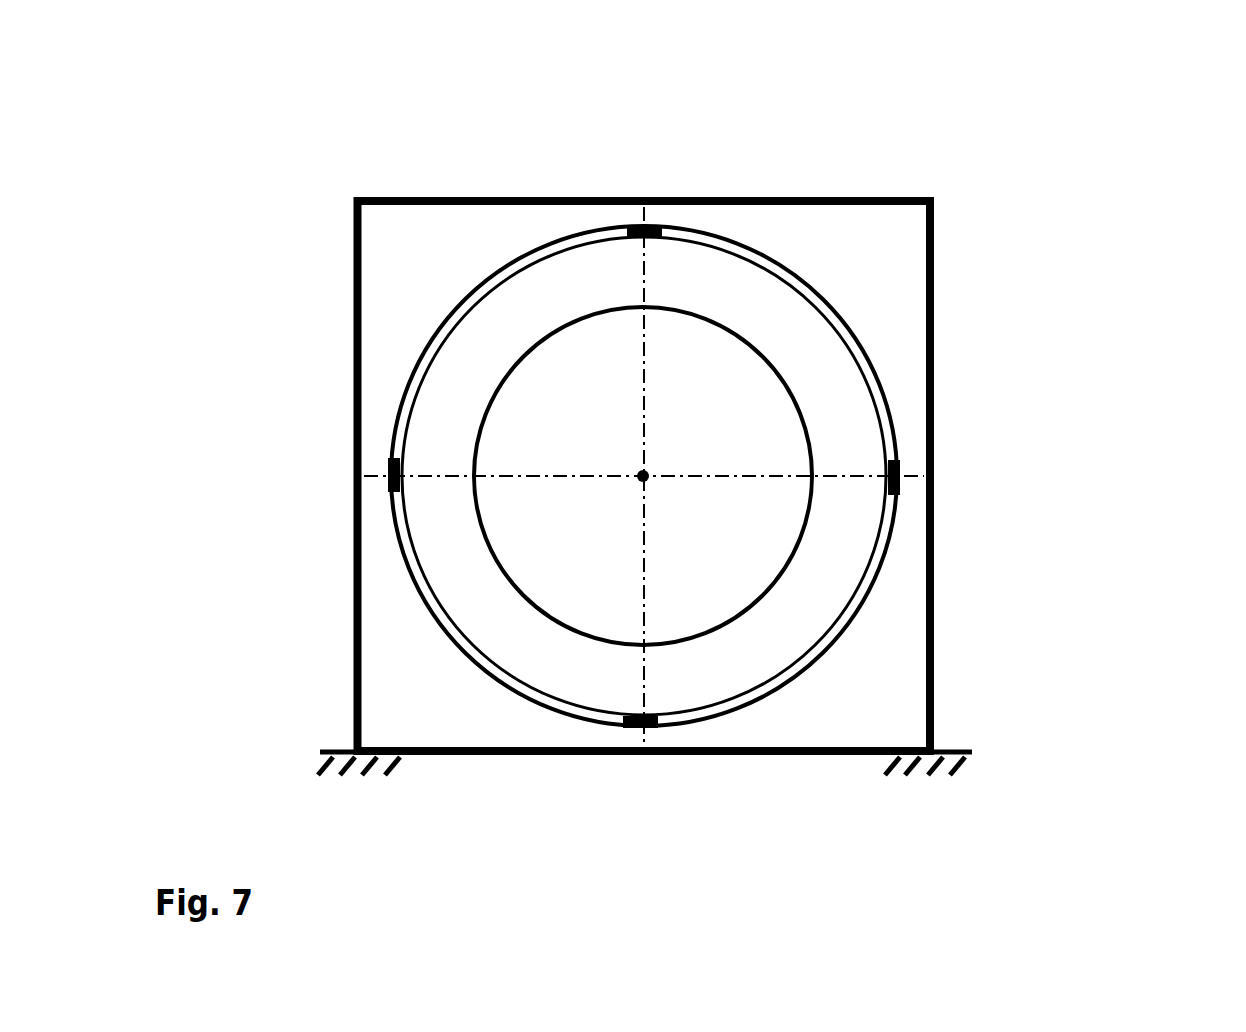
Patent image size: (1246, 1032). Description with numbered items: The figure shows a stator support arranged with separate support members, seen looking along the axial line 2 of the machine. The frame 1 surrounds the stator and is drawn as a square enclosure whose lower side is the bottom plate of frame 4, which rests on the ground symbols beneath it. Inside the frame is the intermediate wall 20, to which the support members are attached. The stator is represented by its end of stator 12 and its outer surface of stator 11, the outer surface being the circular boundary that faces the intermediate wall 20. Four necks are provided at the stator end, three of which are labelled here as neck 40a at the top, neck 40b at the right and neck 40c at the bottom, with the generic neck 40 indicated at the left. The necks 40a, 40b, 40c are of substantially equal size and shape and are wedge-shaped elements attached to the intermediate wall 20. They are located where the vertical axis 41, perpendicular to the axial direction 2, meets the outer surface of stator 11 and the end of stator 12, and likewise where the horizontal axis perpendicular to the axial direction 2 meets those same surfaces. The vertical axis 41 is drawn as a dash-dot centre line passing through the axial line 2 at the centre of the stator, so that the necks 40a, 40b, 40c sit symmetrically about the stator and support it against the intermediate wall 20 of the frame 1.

The frame 1 is at (478, 197).
The axial line 2 is at (643, 476).
The bottom plate of frame 4 is at (532, 473).
The outer surface of stator 11 is at (420, 372).
The end of stator 12 is at (835, 583).
The intermediate wall 20 is at (860, 282).
The neck 40 is at (390, 477).
The neck 40a is at (655, 225).
The neck 40b is at (905, 478).
The neck 40c is at (630, 728).
The vertical axis 41 is at (643, 383).